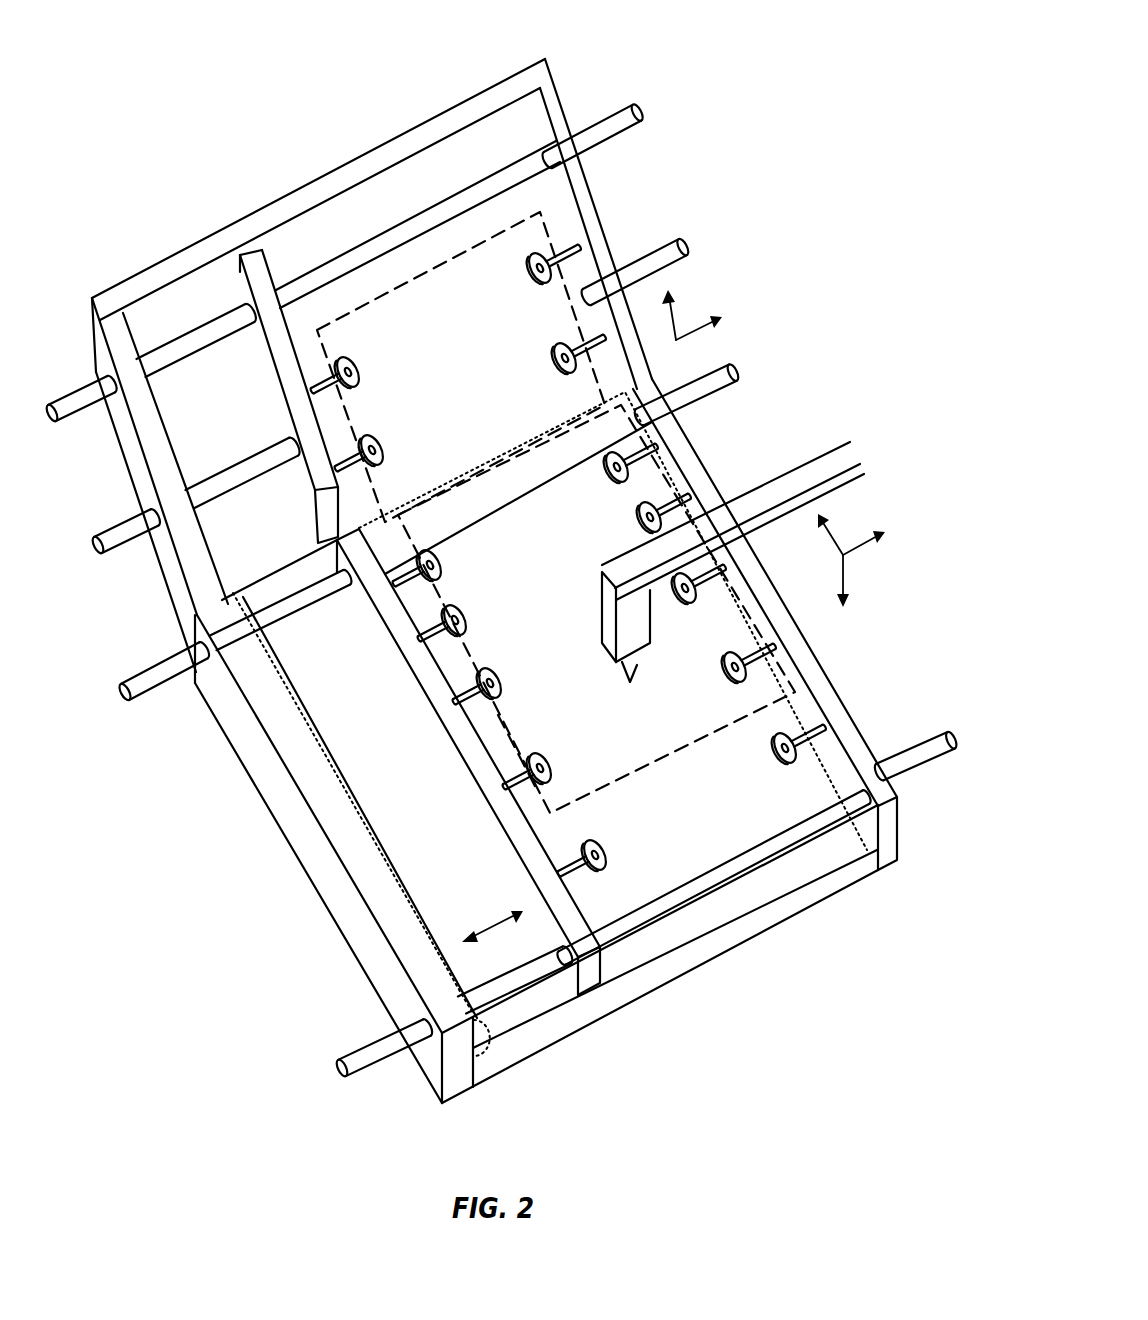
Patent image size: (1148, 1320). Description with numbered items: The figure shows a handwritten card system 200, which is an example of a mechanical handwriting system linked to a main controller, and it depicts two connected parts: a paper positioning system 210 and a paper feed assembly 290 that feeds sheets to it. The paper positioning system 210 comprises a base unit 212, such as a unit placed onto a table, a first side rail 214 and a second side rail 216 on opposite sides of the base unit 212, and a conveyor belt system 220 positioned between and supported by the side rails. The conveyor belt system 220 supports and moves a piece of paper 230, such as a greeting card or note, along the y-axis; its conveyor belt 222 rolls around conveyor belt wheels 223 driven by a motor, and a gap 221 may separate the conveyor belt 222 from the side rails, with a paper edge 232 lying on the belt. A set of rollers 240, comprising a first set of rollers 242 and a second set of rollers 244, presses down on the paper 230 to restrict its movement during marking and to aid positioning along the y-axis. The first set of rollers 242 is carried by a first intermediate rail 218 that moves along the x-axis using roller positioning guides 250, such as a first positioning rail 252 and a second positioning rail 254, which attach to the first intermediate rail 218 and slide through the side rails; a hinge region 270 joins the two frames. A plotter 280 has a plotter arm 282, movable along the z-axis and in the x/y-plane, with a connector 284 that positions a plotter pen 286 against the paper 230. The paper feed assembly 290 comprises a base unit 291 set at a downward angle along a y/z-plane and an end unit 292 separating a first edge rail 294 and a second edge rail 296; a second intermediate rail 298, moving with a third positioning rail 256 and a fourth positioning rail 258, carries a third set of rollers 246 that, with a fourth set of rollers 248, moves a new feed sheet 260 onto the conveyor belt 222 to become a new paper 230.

The handwritten card system 200 is at (825, 55).
The paper positioning system 210 is at (802, 373).
The base unit 212 is at (530, 1060).
The first side rail 214 is at (270, 812).
The second side rail 216 is at (828, 670).
The first intermediate rail 218 is at (480, 840).
The conveyor belt system 220 is at (742, 918).
The gap 221 is at (312, 720).
The conveyor belt 222 is at (406, 777).
The conveyor belt wheels 223 is at (488, 1024).
The paper 230 is at (581, 662).
The substrate edge 232 is at (508, 720).
The set of rollers 240 is at (614, 906).
The first set of rollers 242 is at (592, 880).
The second set of rollers 244 is at (810, 768).
The third set of rollers 246 is at (404, 462).
The fourth set of rollers 248 is at (564, 395).
The roller positioning guides 250 is at (392, 1093).
The first positioning rail 252 is at (372, 1040).
The second positioning rail 254 is at (162, 668).
The third positioning rail 256 is at (113, 520).
The fourth positioning rail 258 is at (89, 417).
The new feed sheet 260 is at (461, 324).
The hinge rod 270 is at (205, 614).
The plotter 280 is at (872, 433).
The plotter arm 282 is at (800, 465).
The connector 284 is at (652, 614).
The plotter pen 286 is at (640, 668).
The paper feed assembly 290 is at (678, 142).
The base unit 291 is at (281, 539).
The end unit 292 is at (296, 196).
The first edge rail 294 is at (116, 444).
The second edge rail 296 is at (604, 232).
The second intermediate rail 298 is at (268, 374).